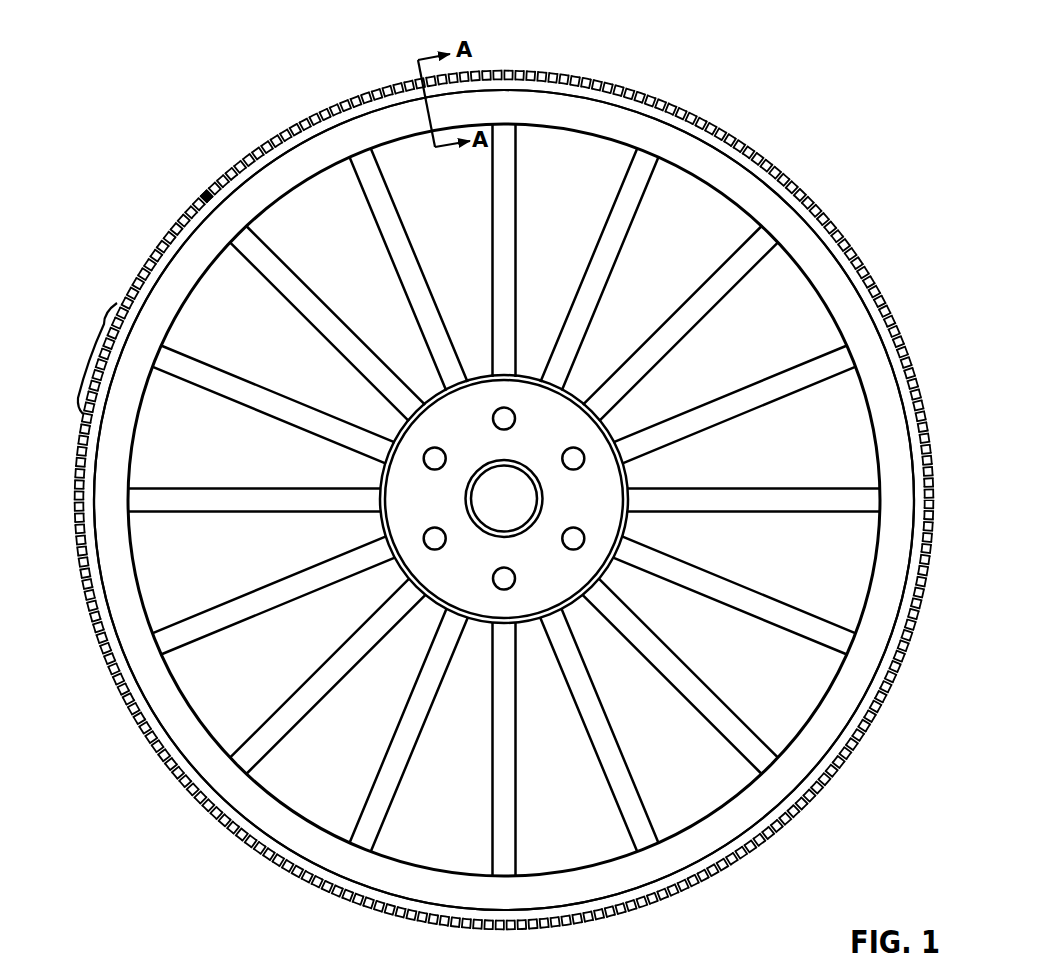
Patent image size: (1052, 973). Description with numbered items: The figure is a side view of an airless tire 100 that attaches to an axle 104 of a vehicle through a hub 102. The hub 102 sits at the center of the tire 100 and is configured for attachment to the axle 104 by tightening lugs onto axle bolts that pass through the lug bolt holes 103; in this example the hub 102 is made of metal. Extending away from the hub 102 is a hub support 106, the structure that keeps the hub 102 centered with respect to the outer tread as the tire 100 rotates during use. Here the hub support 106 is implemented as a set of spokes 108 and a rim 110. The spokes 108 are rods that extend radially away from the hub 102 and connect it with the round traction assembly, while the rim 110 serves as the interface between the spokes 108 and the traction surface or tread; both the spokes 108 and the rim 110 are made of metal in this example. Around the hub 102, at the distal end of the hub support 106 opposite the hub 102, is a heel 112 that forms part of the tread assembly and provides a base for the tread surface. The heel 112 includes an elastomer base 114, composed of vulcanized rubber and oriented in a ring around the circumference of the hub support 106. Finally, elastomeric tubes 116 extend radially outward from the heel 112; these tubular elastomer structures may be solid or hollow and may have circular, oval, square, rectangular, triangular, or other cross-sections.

The airless tire 100 is at (173, 88).
The hub 102 is at (477, 439).
The lug bolt holes 103 is at (572, 447).
The axle 104 is at (522, 512).
The hub support 106 is at (504, 500).
The spokes 108 is at (755, 409).
The rim 110 is at (580, 121).
The heel 112 is at (198, 194).
The elastomer base 114 is at (150, 262).
The elastomeric tubes 116 is at (90, 353).